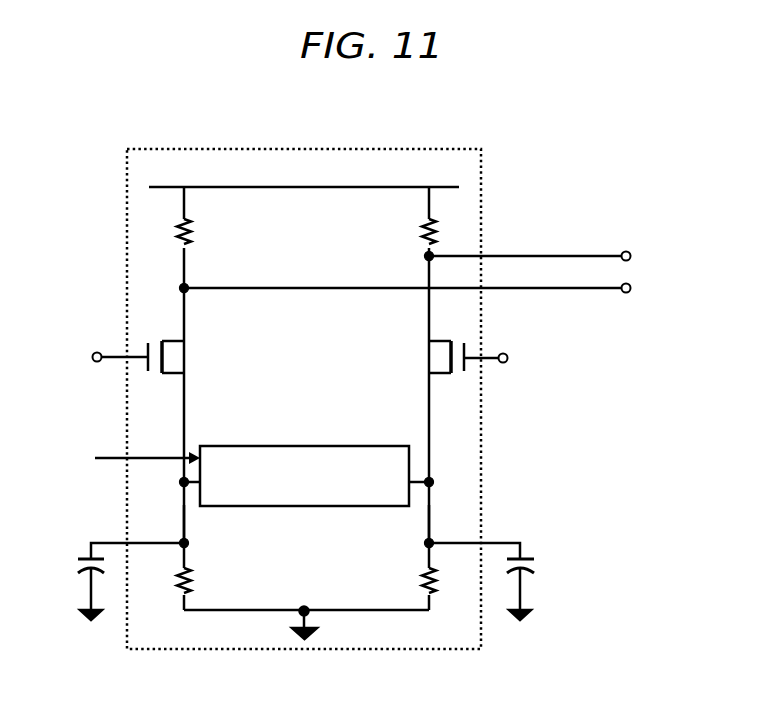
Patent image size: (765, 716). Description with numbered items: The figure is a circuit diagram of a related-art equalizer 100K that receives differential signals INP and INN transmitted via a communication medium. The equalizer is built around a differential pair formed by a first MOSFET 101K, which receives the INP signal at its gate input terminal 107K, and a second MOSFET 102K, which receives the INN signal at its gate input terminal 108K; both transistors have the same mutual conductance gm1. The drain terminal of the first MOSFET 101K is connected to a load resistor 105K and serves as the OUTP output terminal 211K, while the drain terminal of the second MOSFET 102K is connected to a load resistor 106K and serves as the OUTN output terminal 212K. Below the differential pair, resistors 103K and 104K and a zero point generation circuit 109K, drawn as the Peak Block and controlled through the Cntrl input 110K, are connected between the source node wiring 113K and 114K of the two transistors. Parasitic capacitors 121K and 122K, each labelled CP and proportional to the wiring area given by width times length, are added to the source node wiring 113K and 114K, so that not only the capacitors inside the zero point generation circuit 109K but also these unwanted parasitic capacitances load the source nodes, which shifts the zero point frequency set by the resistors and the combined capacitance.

The equalizer 100K is at (293, 149).
The first MOSFET 101K is at (173, 357).
The second MOSFET 102K is at (427, 348).
The resistor 103K is at (178, 593).
The resistor 104K is at (436, 596).
The load resistor 105K is at (193, 234).
The load resistor 106K is at (426, 236).
The gate input terminal 107K is at (97, 351).
The gate input terminal 108K is at (503, 364).
The zero point generation circuit 109K is at (295, 455).
The control terminal 110K is at (142, 432).
The source node wiring 113K is at (184, 515).
The source node wiring 114K is at (429, 518).
The parasitic capacitor 121K is at (88, 556).
The parasitic capacitor 122K is at (530, 558).
The output terminal 211K is at (626, 251).
The output terminal 212K is at (626, 293).